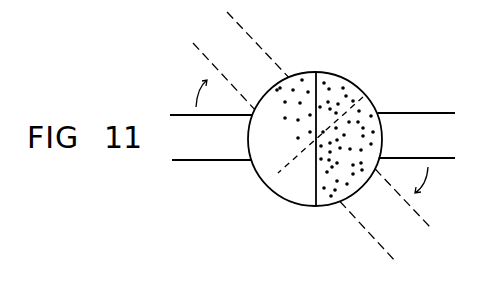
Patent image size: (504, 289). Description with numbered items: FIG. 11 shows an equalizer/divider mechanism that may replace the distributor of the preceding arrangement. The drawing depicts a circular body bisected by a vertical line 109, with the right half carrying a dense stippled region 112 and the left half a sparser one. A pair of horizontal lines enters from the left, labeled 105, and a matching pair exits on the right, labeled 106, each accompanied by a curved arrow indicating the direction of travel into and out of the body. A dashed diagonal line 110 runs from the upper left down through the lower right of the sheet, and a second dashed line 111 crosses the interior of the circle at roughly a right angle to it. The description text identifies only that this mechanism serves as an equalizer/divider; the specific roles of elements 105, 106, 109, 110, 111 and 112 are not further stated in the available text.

The input light beam 105 is at (210, 152).
The output light beam 106 is at (450, 149).
The dividing line of sphere 109 is at (318, 72).
The diagonal optical axis line 110 is at (370, 238).
The perpendicular dashed line 111 is at (272, 181).
The dotted scattering region 112 is at (378, 112).